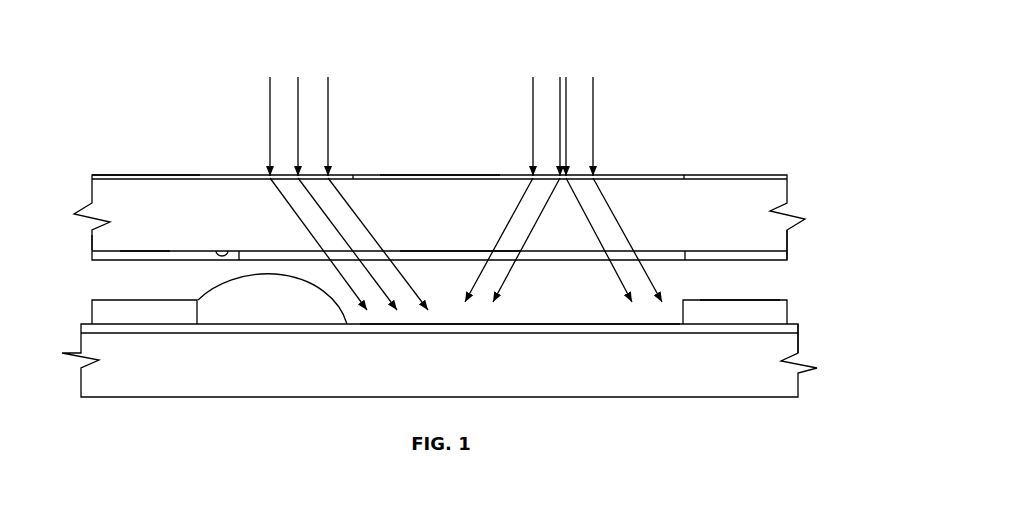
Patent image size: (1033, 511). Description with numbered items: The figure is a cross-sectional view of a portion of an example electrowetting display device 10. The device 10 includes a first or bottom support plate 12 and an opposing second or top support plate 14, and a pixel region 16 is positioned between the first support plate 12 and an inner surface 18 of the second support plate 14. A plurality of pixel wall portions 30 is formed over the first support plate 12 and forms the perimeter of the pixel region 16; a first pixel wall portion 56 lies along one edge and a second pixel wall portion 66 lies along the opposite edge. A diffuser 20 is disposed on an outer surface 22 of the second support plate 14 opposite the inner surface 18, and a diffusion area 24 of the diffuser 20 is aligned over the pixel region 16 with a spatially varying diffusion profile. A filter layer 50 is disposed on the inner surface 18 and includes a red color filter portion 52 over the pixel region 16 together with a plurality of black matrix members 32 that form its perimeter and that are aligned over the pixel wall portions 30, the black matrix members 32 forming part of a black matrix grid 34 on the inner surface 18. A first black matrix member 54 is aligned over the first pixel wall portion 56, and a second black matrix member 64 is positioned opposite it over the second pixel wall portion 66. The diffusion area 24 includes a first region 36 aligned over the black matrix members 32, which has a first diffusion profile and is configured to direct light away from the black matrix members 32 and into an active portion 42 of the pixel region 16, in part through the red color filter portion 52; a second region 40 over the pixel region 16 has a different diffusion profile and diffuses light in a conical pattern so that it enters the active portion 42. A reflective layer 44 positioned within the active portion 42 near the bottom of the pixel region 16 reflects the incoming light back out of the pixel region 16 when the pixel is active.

The electrowetting display device 10 is at (727, 67).
The first support plate 12 is at (716, 386).
The second support plate 14 is at (744, 224).
The pixel region 16 is at (802, 273).
The inner surface 18 is at (222, 251).
The diffuser 20 is at (193, 150).
The outer surface 22 is at (135, 175).
The diffusion area 24 is at (660, 152).
The pixel wall portions 30 is at (135, 315).
The black matrix members 32 is at (170, 248).
The black matrix grid 34 is at (118, 245).
The first region 36 is at (258, 174).
The second region 40 is at (437, 172).
The active portion 42 is at (437, 322).
The reflective layer 44 is at (545, 330).
The filter layer 50 is at (787, 255).
The red color filter portion 52 is at (440, 250).
The first black matrix member 54 is at (142, 250).
The first pixel wall portion 56 is at (170, 317).
The second black matrix member 64 is at (720, 260).
The second pixel wall portion 66 is at (747, 318).